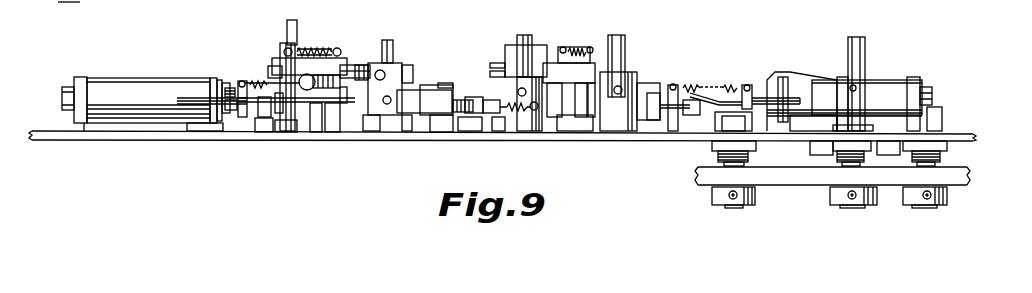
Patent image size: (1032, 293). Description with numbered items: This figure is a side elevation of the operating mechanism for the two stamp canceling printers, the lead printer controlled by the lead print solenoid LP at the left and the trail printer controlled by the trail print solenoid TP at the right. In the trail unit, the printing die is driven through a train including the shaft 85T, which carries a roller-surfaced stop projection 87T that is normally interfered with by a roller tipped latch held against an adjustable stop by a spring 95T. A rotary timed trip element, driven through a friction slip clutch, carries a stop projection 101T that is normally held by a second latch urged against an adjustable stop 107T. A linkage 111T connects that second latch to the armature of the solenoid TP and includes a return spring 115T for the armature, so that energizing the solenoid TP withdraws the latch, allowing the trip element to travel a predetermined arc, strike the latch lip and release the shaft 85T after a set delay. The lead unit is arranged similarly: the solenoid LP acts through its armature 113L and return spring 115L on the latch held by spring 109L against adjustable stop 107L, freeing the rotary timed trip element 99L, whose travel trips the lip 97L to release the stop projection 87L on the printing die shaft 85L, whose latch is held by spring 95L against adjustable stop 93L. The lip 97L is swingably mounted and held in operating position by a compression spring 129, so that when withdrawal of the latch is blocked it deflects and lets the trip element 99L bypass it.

The lead print solenoid LP is at (136, 92).
The armature 113L is at (229, 131).
The return spring 115L is at (243, 79).
The stop projection 87L is at (260, 80).
The printing die shaft 85L is at (287, 24).
The spring 95L is at (317, 47).
The adjustable stop 93L is at (310, 90).
The lip 97L is at (363, 64).
The compression spring 129 is at (365, 65).
The rotary timed trip element 99L is at (407, 65).
The adjustable stop 107L is at (491, 100).
The spring 109L is at (507, 113).
The stop projection 87T is at (493, 66).
The shaft 85T is at (520, 40).
The spring 95T is at (575, 45).
The stop projection 101T is at (643, 83).
The adjustable stop 107T is at (693, 137).
The return spring 115T is at (722, 80).
The linkage 111T is at (813, 60).
The trail print solenoid TP is at (888, 88).